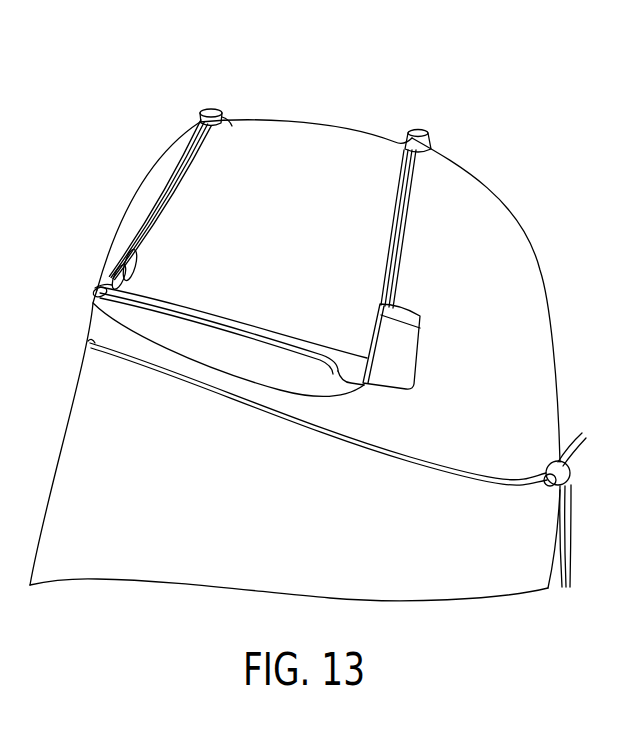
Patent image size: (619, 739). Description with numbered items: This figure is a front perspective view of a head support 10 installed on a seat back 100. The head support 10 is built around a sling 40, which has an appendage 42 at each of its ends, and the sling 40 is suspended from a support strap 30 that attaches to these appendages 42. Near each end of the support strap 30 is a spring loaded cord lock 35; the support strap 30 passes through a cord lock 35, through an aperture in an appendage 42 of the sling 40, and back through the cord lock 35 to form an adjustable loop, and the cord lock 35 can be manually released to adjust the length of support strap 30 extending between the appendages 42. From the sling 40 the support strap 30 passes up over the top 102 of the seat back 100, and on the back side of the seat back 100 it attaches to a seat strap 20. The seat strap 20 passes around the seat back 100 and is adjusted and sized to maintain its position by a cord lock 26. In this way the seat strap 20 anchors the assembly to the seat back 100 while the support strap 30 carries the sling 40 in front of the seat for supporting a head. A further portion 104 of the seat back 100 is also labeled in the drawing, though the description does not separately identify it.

The head support 10 is at (413, 446).
The seat strap 20 is at (481, 473).
The cord lock 26 is at (562, 461).
The support strap 30 is at (178, 148).
The spring loaded cord lock 35 is at (417, 128).
The sling portion 40 is at (278, 332).
The appendage 42 is at (110, 273).
The seat back 100 is at (541, 272).
The top of seat back 102 is at (327, 126).
The body portion 104 is at (281, 488).